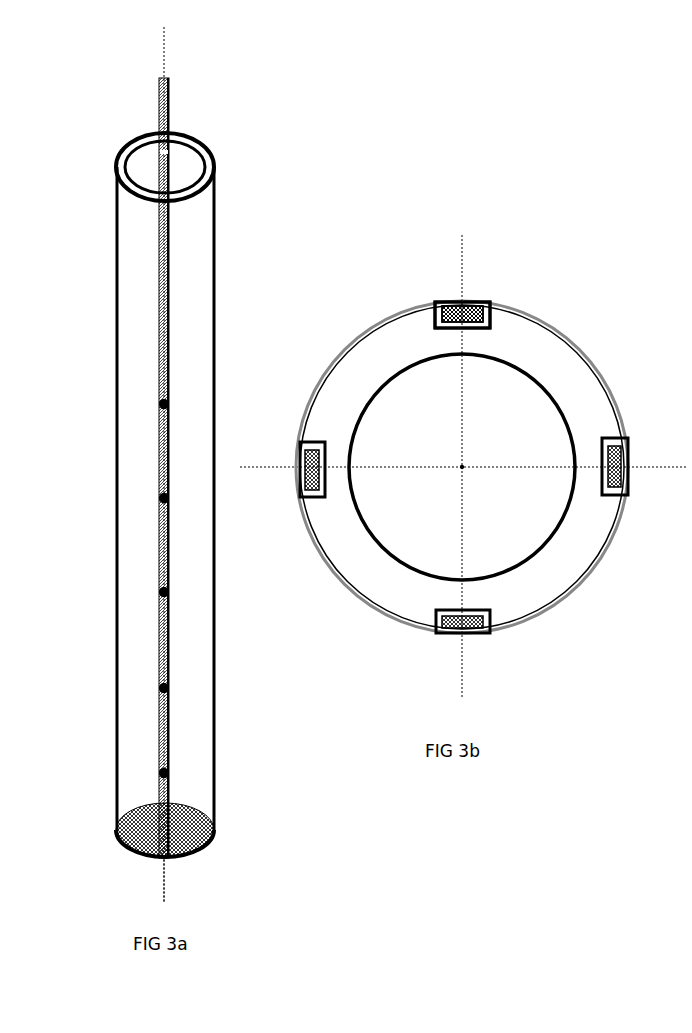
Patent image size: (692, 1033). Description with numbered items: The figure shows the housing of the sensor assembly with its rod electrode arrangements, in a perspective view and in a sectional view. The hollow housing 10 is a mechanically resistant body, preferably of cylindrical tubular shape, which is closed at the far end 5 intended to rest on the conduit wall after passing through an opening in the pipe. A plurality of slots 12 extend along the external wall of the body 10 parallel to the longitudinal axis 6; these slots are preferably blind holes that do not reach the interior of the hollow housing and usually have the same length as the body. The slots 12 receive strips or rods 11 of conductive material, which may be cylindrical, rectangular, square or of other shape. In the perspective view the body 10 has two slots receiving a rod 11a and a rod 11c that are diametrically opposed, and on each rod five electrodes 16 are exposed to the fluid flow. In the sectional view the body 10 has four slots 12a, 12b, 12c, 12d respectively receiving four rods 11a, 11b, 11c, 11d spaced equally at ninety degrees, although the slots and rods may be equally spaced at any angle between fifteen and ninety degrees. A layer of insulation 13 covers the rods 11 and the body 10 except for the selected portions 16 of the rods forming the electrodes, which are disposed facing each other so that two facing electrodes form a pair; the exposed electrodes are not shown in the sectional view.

In FIG. 3A, the far end 5 is at (118, 834).
In FIG. 3A, the longitudinal axis 6 is at (168, 876).
In FIG. 3B, the longitudinal axis 6 is at (462, 467).
In FIG. 3A, the hollow housing 10 is at (117, 322).
In FIG. 3B, the hollow housing 10 is at (557, 570).
In FIG. 3B, the rods 11 is at (442, 304).
In FIG. 3A, the rod 11a is at (164, 88).
In FIG. 3B, the rod 11a is at (468, 303).
In FIG. 3B, the rod 11b is at (628, 466).
In FIG. 3A, the rod 11c is at (160, 152).
In FIG. 3B, the rod 11c is at (460, 633).
In FIG. 3B, the rod 11d is at (300, 464).
In FIG. 3B, the slots 12 is at (490, 316).
In FIG. 3B, the slot 12a is at (435, 305).
In FIG. 3B, the slot 12b is at (622, 440).
In FIG. 3B, the slot 12c is at (490, 618).
In FIG. 3B, the slot 12d is at (300, 442).
In FIG. 3B, the layer of insulation 13 is at (560, 322).
In FIG. 3A, the electrodes 16 is at (164, 404).